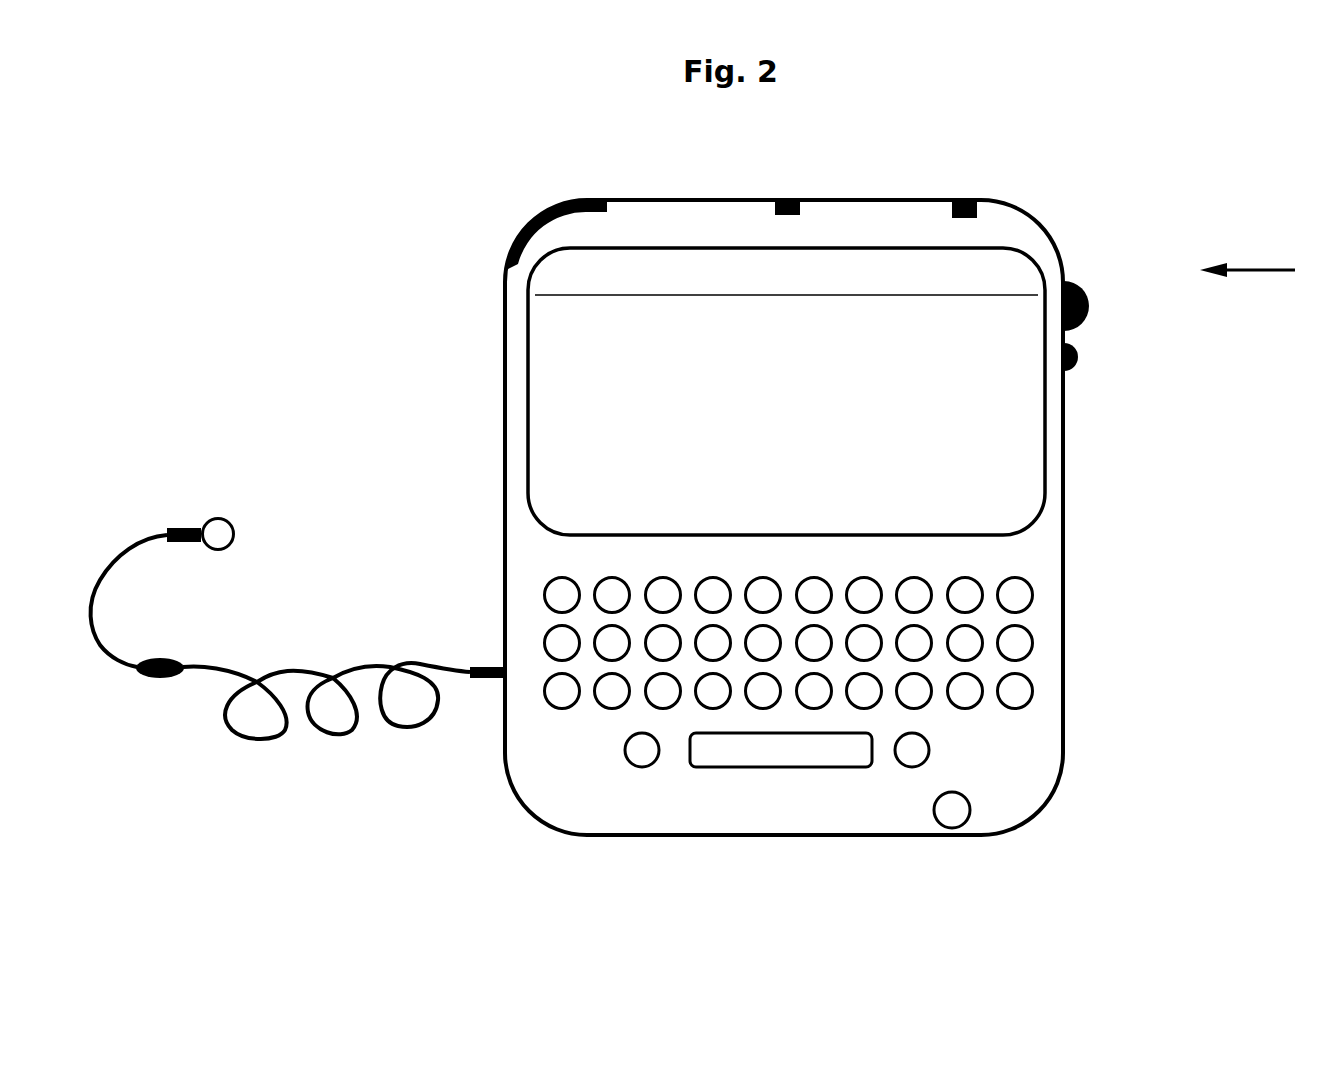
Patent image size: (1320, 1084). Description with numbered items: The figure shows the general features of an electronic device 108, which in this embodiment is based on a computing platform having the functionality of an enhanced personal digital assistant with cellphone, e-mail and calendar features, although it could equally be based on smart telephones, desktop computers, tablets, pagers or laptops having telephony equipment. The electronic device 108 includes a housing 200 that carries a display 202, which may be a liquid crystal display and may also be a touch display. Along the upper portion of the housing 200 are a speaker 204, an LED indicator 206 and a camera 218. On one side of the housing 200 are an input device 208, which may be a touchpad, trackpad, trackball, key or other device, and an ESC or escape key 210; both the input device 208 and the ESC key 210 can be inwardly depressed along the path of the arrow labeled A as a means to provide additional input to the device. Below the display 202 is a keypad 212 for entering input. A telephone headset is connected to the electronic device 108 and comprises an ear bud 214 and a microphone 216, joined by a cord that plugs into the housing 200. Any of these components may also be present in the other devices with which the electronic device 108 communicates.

The electronic device 108 is at (700, 885).
The housing 200 is at (1020, 752).
The display 202 is at (610, 384).
The speaker 204 is at (518, 232).
The LED indicator 206 is at (1007, 205).
The input device 208 is at (1105, 302).
The ESC key 210 is at (1093, 362).
The keypad 212 is at (1021, 563).
The ear bud 214 is at (245, 527).
The microphone 216 is at (200, 651).
The camera 218 is at (789, 196).